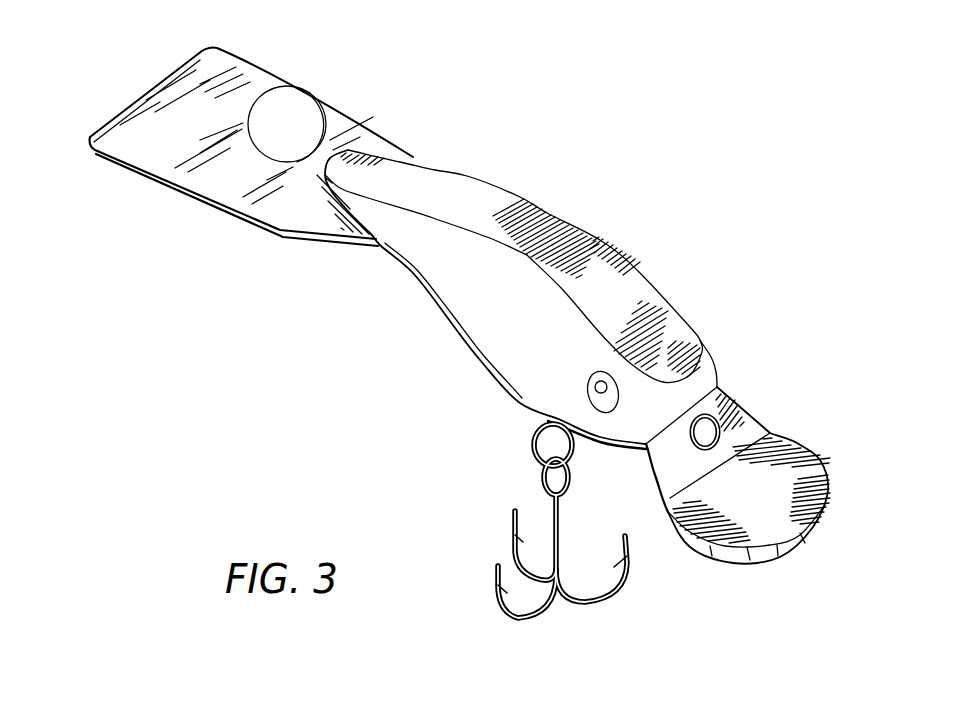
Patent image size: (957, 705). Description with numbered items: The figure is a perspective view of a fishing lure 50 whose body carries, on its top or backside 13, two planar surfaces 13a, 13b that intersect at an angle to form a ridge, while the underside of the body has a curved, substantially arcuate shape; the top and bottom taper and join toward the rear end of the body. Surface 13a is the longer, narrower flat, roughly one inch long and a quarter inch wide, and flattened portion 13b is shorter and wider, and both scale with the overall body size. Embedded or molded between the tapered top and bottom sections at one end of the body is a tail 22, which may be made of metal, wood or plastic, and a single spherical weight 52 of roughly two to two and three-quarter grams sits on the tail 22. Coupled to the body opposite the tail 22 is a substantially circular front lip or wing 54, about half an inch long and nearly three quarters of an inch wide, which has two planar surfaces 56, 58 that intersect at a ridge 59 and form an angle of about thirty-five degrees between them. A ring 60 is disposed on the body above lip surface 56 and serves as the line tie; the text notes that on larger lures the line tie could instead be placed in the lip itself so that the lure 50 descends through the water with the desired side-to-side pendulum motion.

The lure 50 is at (682, 137).
The tail 22 is at (332, 103).
The weight 52 is at (293, 103).
The top or backside 13 is at (609, 219).
The planar surface 13a is at (456, 203).
The planar surface 13b is at (634, 309).
The front lip or wing 54 is at (786, 407).
The ring 60 is at (718, 418).
The lip surface 56 is at (702, 481).
The ridge 59 is at (783, 442).
The lip surface 58 is at (784, 517).